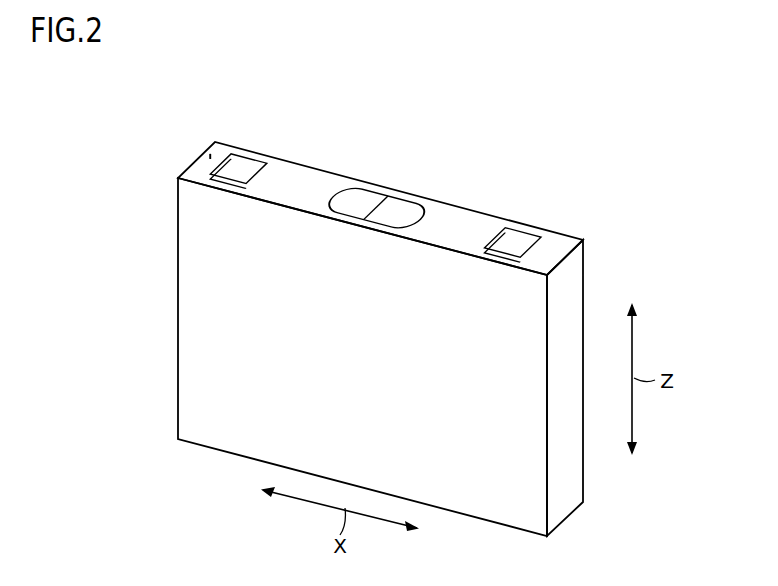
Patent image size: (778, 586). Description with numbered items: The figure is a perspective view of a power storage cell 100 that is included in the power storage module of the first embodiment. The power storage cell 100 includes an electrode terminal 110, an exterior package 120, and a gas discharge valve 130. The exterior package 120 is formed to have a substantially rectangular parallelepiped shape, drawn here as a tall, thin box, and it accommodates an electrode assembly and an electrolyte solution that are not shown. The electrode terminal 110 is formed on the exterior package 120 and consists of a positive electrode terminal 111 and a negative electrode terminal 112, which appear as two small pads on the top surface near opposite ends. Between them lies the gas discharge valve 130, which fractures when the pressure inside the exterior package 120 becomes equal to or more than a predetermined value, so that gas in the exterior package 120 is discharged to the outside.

The power storage cell 100 is at (188, 119).
The electrode terminal 110 is at (227, 104).
The positive electrode terminal 111 is at (238, 166).
The negative electrode terminal 112 is at (515, 238).
The exterior package 120 is at (461, 503).
The gas discharge valve 130 is at (345, 200).